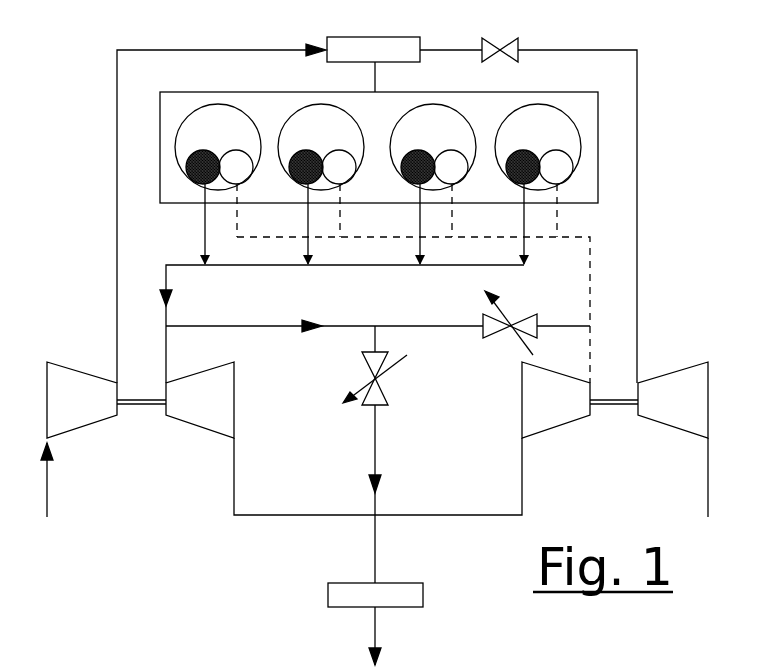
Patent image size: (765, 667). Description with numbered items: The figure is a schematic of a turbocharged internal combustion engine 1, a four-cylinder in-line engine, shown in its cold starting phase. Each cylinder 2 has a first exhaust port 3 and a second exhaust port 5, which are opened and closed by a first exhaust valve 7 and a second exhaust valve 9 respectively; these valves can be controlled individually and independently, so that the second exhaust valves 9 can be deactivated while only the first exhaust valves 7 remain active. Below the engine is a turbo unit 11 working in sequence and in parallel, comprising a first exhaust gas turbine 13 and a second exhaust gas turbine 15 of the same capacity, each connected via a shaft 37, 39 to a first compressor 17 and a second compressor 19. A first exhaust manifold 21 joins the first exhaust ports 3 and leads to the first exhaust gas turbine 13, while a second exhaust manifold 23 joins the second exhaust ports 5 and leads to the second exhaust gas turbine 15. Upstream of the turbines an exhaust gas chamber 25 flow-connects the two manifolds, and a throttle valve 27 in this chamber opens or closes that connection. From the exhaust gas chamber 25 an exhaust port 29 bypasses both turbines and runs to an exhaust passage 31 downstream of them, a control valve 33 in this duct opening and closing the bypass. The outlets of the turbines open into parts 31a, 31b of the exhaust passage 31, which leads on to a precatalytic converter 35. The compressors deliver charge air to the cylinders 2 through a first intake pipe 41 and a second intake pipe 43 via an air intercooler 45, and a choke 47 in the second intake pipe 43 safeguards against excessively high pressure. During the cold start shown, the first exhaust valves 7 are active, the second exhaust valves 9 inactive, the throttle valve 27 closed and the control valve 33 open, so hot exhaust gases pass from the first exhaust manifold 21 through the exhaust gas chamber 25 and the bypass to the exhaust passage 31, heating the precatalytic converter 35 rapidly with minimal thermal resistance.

The internal combustion engine 1 is at (598, 105).
The cylinder 2 is at (175, 145).
The first exhaust port 3 is at (188, 182).
The second exhaust port 5 is at (236, 180).
The first exhaust valve 7 is at (197, 186).
The second exhaust valve 9 is at (243, 198).
The turbo unit 11 is at (587, 448).
The first exhaust gas turbine 13 is at (221, 416).
The second exhaust gas turbine 15 is at (565, 416).
The first compressor 17 is at (89, 413).
The second compressor 19 is at (692, 413).
The first exhaust manifold 21 is at (167, 275).
The second exhaust manifold 23 is at (590, 263).
The exhaust gas chamber 25 is at (267, 326).
The throttle valve 27 is at (525, 323).
The exhaust port 29 is at (375, 447).
The exhaust passage 31 is at (375, 543).
The part of exhaust passage 31a is at (257, 515).
The part of exhaust passage 31b is at (463, 515).
The control valve 33 is at (377, 383).
The precatalytic converter 35 is at (423, 603).
The shaft 37 is at (147, 405).
The shaft 39 is at (618, 405).
The first intake pipe 41 is at (118, 222).
The second intake pipe 43 is at (637, 187).
The air intercooler 45 is at (422, 40).
The choke 47 is at (518, 50).